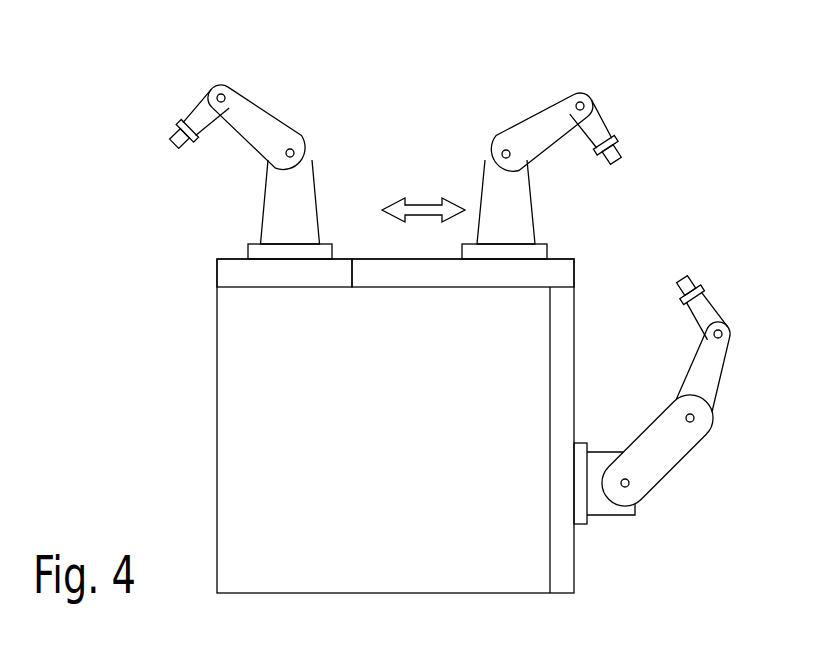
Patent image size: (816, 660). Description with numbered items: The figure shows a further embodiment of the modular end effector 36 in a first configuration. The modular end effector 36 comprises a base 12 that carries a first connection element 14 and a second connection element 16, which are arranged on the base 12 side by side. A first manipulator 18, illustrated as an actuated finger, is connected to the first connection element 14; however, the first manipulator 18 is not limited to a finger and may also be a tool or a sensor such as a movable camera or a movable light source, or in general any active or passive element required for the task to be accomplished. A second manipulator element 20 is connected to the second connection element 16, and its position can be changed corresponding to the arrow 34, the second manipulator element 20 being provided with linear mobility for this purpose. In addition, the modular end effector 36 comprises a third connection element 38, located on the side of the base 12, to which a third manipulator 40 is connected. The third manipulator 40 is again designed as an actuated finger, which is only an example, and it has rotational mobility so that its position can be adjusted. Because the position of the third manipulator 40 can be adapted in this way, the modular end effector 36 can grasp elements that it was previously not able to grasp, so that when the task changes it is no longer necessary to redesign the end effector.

The base 12 is at (233, 367).
The first connection element 14 is at (233, 277).
The second connection element 16 is at (527, 275).
The first manipulator 18 is at (202, 119).
The second manipulator element 20 is at (523, 137).
The arrow 34 is at (422, 212).
The modular end effector 36 is at (662, 165).
The third connection element 38 is at (562, 543).
The third manipulator 40 is at (648, 460).